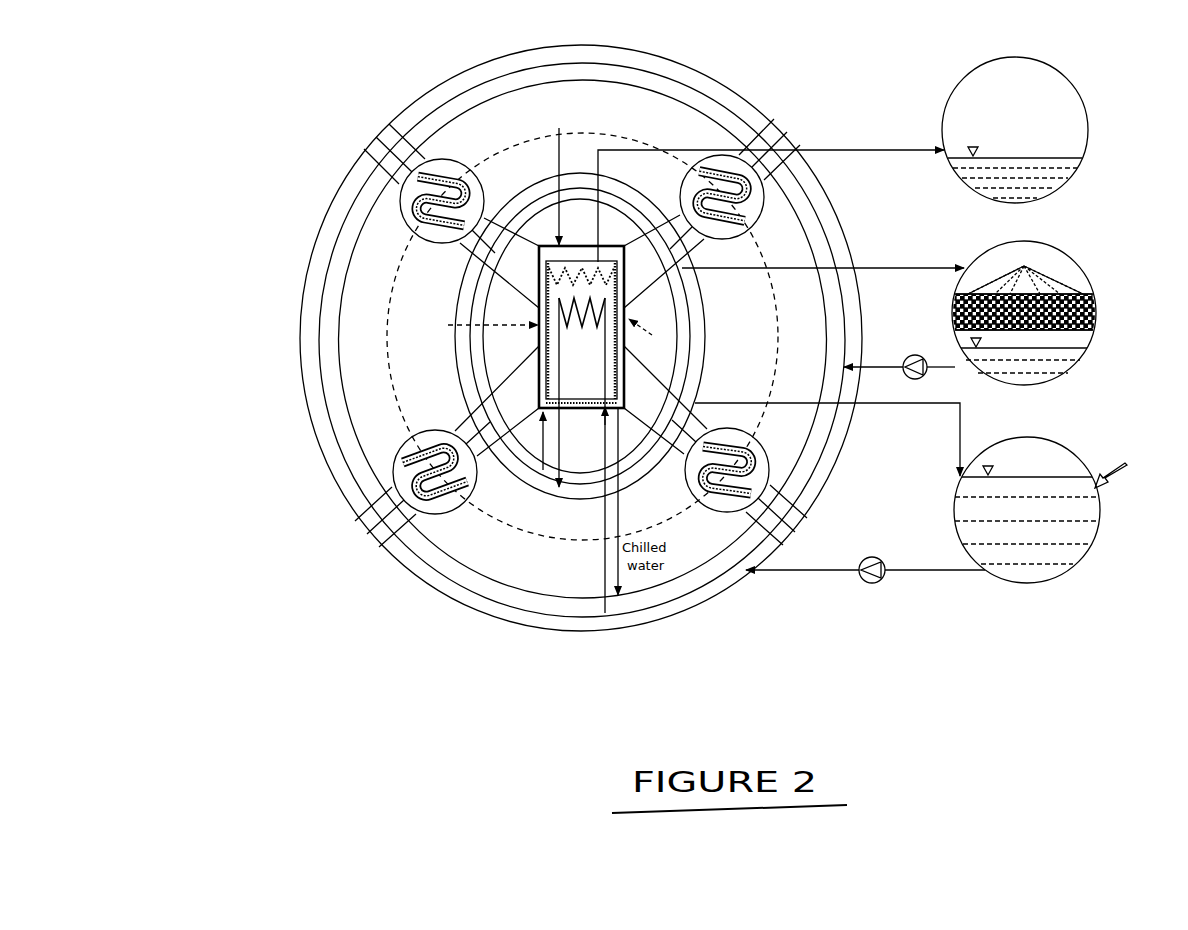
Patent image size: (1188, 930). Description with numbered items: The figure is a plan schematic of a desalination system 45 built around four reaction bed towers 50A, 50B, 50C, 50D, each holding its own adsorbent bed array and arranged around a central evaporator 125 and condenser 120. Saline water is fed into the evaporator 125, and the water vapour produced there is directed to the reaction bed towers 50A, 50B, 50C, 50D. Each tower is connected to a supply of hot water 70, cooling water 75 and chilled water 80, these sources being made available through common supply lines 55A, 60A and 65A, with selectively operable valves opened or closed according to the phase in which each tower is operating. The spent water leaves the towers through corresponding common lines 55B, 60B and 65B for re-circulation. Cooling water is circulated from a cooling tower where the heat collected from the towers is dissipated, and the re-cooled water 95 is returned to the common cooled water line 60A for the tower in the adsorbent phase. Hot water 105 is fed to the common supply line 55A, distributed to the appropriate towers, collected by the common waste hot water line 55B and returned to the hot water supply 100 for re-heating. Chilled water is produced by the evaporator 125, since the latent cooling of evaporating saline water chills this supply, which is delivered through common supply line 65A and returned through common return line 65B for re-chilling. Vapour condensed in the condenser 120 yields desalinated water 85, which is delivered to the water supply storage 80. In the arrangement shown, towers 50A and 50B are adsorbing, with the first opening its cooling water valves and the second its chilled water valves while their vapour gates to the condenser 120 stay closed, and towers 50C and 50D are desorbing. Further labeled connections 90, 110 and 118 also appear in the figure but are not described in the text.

The desalination system 45 is at (311, 648).
The reaction bed tower 50A is at (447, 446).
The reaction bed tower 50B is at (715, 445).
The reaction bed tower 50C is at (712, 213).
The reaction bed tower 50D is at (451, 216).
The common supply line 55A is at (429, 92).
The common waste hot water line 55B is at (461, 291).
The common cooled water line 60A is at (414, 127).
The common line 60B is at (705, 313).
The common supply line 65A is at (372, 203).
The common return line 65B is at (689, 368).
The hot water 70 is at (1045, 510).
The cooling water 75 is at (1051, 313).
The water supply storage 80 is at (1041, 130).
The desalinated water 85 is at (771, 191).
The brine line 90 is at (823, 256).
The re-cooled water 95 is at (901, 374).
The hot water supply 100 is at (956, 428).
The hot water 105 is at (865, 581).
The inlet 110 is at (1134, 467).
The feed inlet 118 is at (550, 174).
The condenser 120 is at (470, 327).
The evaporator 125 is at (654, 337).